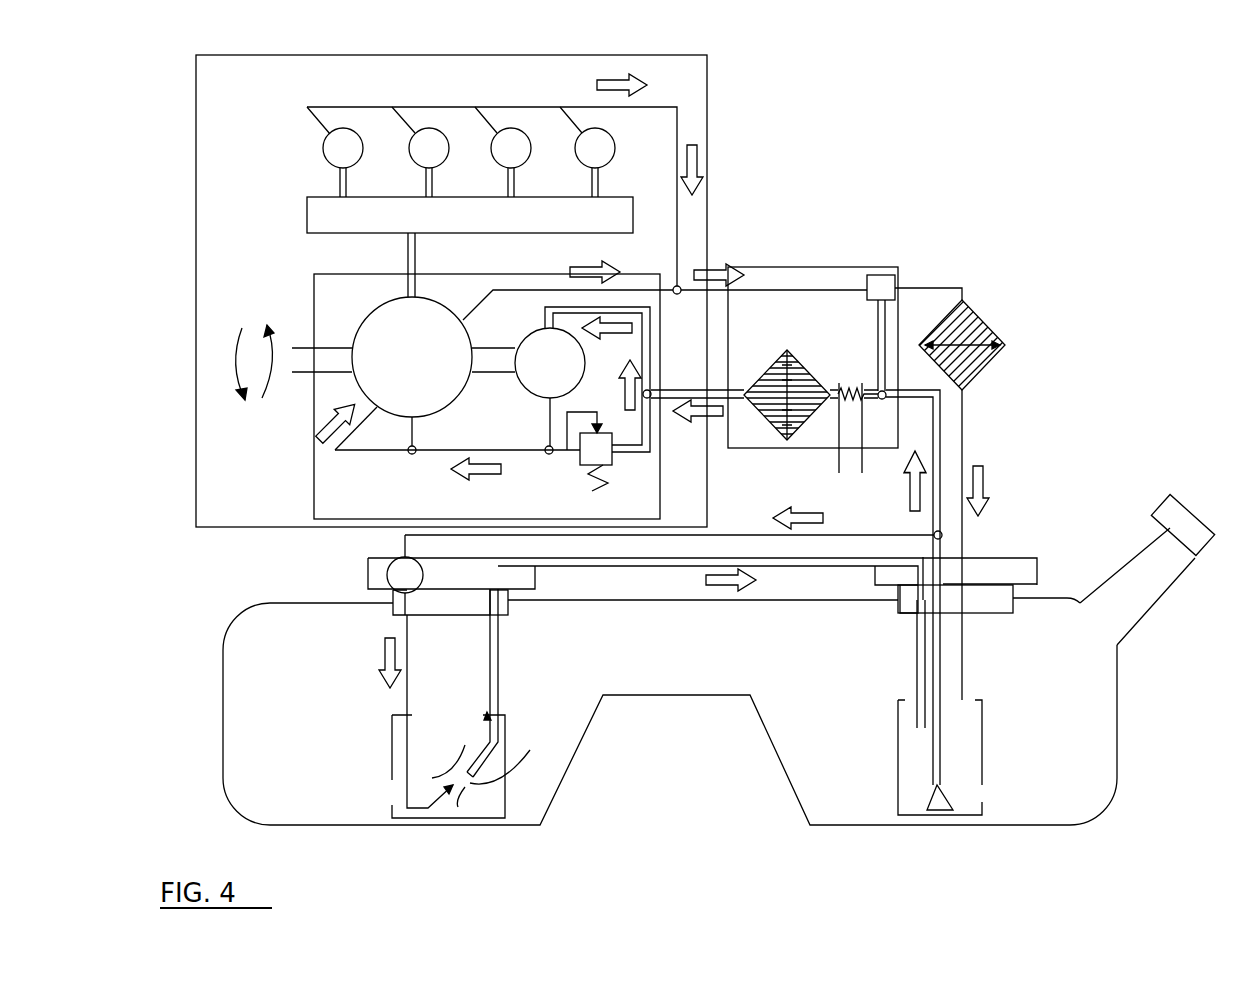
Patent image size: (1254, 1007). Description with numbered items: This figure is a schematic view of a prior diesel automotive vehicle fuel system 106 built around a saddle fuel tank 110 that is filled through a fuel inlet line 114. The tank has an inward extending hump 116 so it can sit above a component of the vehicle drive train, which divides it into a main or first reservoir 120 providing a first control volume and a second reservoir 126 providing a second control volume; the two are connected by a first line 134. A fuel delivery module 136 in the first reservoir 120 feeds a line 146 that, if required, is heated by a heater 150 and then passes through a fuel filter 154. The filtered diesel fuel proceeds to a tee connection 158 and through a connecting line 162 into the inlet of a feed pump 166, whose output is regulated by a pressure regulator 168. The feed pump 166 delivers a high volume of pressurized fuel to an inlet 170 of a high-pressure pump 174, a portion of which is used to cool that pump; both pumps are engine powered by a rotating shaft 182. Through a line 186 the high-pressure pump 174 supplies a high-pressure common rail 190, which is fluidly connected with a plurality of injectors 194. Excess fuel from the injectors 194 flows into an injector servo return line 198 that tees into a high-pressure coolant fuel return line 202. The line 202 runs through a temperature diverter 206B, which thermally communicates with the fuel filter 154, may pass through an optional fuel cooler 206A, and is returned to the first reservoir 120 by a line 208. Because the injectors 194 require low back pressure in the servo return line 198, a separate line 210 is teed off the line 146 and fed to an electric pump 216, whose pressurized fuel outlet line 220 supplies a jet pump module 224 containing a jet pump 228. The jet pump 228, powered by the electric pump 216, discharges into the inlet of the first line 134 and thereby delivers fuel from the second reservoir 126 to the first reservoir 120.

The fuel system 106 is at (912, 50).
The saddle fuel tank 110 is at (1122, 698).
The fuel inlet line 114 is at (1160, 578).
The inward extending hump 116 is at (770, 745).
The first reservoir 120 is at (1118, 745).
The second reservoir 126 is at (222, 682).
The first line 134 is at (499, 648).
The fuel delivery module 136 is at (898, 727).
The line 146 is at (925, 642).
The heater 150 is at (838, 460).
The fuel filter 154 is at (798, 352).
The tee connection 158 is at (651, 393).
The connecting line 162 is at (545, 313).
The feed pump 166 is at (523, 390).
The pressure regulator 168 is at (580, 465).
The inlet 170 is at (415, 417).
The high-pressure pump 174 is at (412, 357).
The rotating shaft 182 is at (293, 362).
The line 186 is at (408, 252).
The high-pressure common rail 190 is at (307, 208).
The injectors 194 is at (323, 148).
The injector servo return line 198 is at (578, 106).
The high-pressure coolant fuel return line 202 is at (635, 292).
The fuel cooler 206A is at (982, 320).
The temperature diverter 206B is at (878, 275).
The line 208 is at (965, 432).
The line 210 is at (862, 527).
The electric pump 216 is at (388, 563).
The pressurized fuel outlet line 220 is at (409, 650).
The jet pump module 224 is at (392, 732).
The jet pump 228 is at (501, 761).